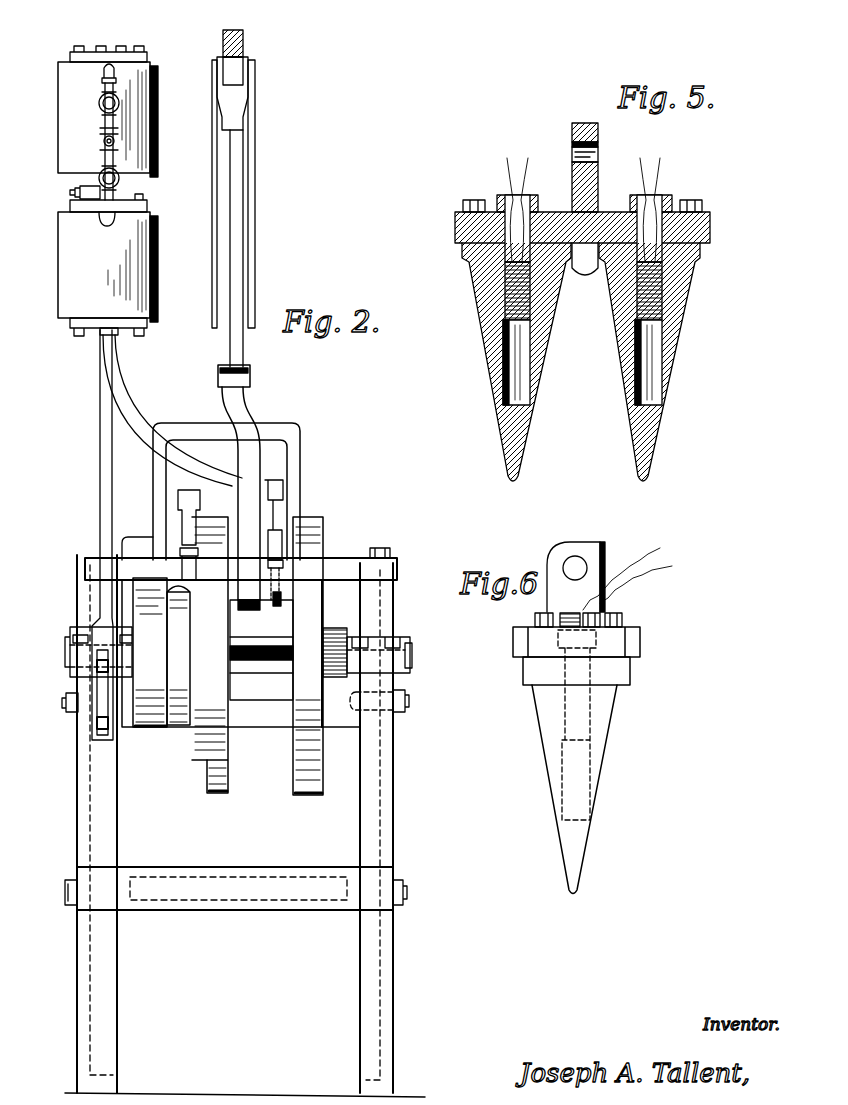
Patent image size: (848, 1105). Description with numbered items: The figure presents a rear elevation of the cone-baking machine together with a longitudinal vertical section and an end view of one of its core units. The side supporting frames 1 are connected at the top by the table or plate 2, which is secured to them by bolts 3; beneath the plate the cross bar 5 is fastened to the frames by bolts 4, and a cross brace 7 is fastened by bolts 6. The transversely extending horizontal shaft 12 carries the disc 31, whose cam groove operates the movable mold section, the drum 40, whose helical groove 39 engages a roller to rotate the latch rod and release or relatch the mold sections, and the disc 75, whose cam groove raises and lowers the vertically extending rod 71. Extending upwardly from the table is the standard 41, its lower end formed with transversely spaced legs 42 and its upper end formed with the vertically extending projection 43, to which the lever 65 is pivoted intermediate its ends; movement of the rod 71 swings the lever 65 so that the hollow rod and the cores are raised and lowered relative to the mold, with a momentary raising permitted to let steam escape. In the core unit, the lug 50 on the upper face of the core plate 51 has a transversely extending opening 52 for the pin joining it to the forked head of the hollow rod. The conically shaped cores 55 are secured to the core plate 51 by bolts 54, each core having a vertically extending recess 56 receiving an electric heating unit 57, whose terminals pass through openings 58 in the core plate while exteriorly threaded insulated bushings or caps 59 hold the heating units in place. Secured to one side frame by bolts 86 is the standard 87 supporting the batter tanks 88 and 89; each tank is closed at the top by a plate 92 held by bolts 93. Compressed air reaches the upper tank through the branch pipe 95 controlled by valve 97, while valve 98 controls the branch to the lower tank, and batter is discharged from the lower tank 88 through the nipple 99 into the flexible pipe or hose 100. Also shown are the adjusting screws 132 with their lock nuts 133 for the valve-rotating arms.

In FIG. 2, the side supporting frames 1 is at (80, 795).
In FIG. 2, the table or plate 2 is at (342, 562).
In FIG. 2, the bolts 3 is at (392, 558).
In FIG. 2, the bolts 4 is at (66, 705).
In FIG. 2, the cross bar 5 is at (272, 722).
In FIG. 2, the bolts 6 is at (403, 892).
In FIG. 2, the cross brace 7 is at (268, 868).
In FIG. 2, the horizontal shaft 12 is at (261, 650).
In FIG. 2, the disc 31 is at (302, 798).
In FIG. 2, the helical groove 39 is at (184, 690).
In FIG. 2, the drum 40 is at (150, 652).
In FIG. 2, the standard 41 is at (254, 247).
In FIG. 2, the legs 42 is at (300, 461).
In FIG. 2, the vertically extending projection 43 is at (246, 98).
In FIG. 2, the lever 65 is at (245, 50).
In FIG. 2, the vertically extending rod 71 is at (244, 184).
In FIG. 2, the disc 75 is at (232, 790).
In FIG. 2, the bolts 86 is at (103, 674).
In FIG. 2, the standard 87 is at (108, 484).
In FIG. 2, the batter tank 88 is at (58, 262).
In FIG. 2, the batter tank 89 is at (58, 145).
In FIG. 2, the plate 92 is at (70, 60).
In FIG. 2, the bolts 93 is at (114, 52).
In FIG. 2, the branch pipe 95 is at (104, 72).
In FIG. 2, the valve 97 is at (100, 107).
In FIG. 2, the valve 98 is at (70, 192).
In FIG. 2, the nipple 99 is at (98, 334).
In FIG. 2, the flexible pipe or hose 100 is at (172, 410).
In FIG. 2, the screws 132 is at (300, 601).
In FIG. 2, the lock nuts 133 is at (283, 564).
In FIG. 5, the lug 50 is at (598, 180).
In FIG. 6, the lug 50 is at (605, 560).
In FIG. 5, the core plate 51 is at (710, 233).
In FIG. 6, the core plate 51 is at (640, 647).
In FIG. 5, the transversely extending opening 52 is at (572, 153).
In FIG. 6, the transversely extending opening 52 is at (575, 556).
In FIG. 5, the bolts 54 is at (704, 205).
In FIG. 6, the bolts 54 is at (625, 623).
In FIG. 5, the conically shaped cores 55 is at (545, 346).
In FIG. 6, the conically shaped cores 55 is at (613, 723).
In FIG. 5, the vertically extending recess 56 is at (522, 389).
In FIG. 5, the electric heating unit 57 is at (530, 301).
In FIG. 5, the openings 58 is at (608, 193).
In FIG. 5, the insulated bushings or caps 59 is at (665, 207).